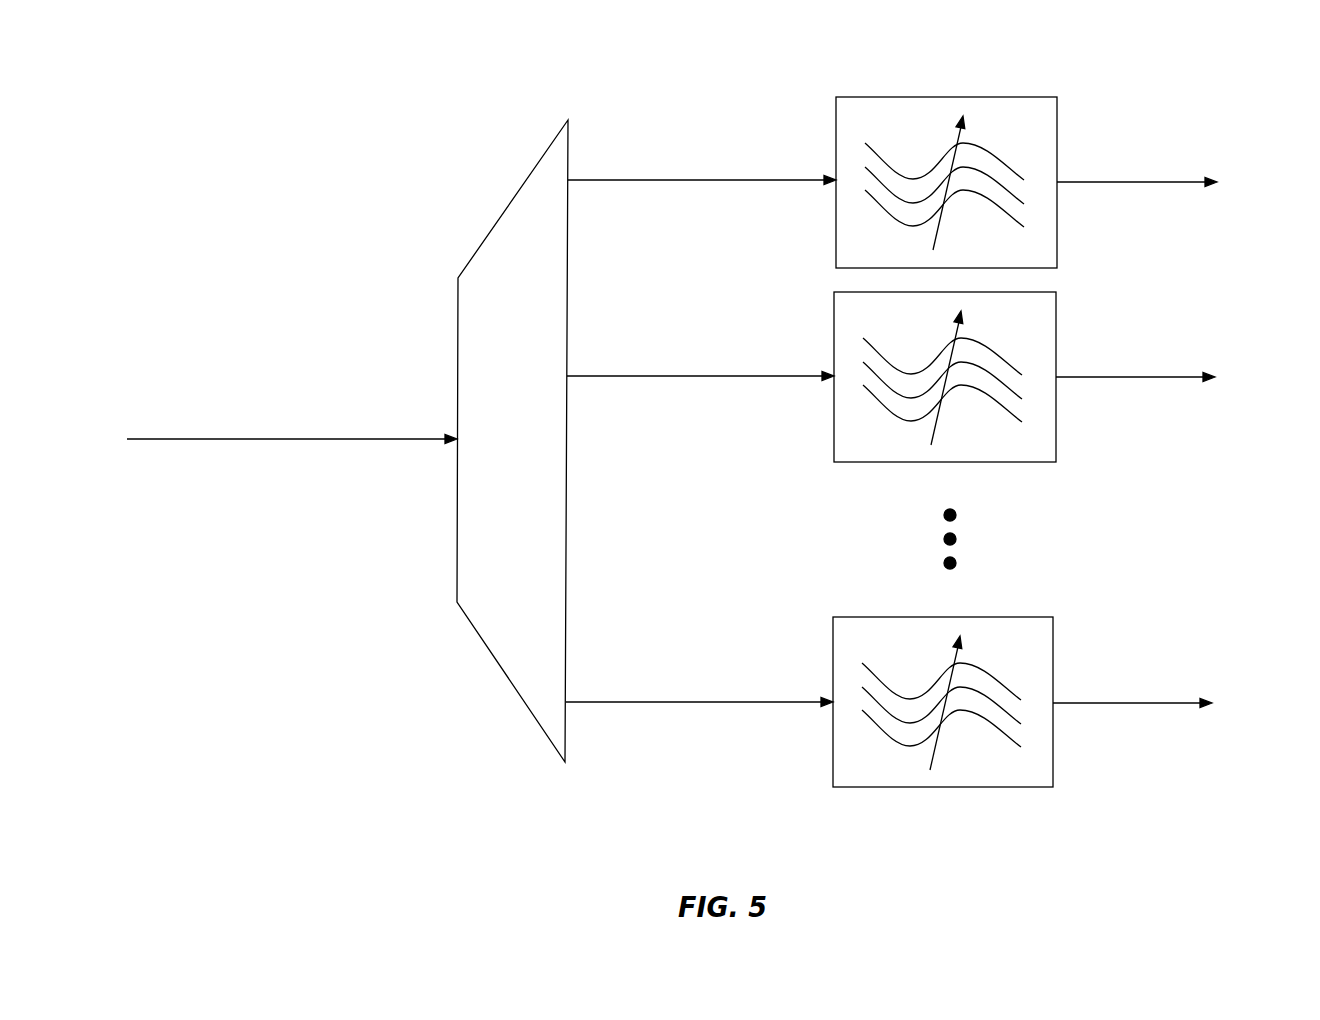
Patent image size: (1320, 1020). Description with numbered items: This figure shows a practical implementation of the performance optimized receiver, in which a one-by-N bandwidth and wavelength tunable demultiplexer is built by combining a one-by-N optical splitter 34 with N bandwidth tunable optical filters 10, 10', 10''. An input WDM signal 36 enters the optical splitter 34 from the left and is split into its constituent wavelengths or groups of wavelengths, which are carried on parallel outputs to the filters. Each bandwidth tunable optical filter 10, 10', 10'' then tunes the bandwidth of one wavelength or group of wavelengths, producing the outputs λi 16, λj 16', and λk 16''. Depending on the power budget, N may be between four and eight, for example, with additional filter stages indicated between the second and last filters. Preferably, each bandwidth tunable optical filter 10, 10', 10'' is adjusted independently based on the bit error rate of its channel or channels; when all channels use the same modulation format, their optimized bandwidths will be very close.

The BW tunable optical filter 10 is at (975, 146).
The BW tunable optical filter 10' is at (994, 362).
The BW tunable optical filter 10'' is at (977, 665).
The wavelength λi 16 is at (1161, 124).
The wavelength λj 16' is at (1163, 319).
The wavelength λk 16'' is at (1162, 645).
The 1×N optical splitter 34 is at (566, 558).
The input WDM signal 36 is at (298, 373).